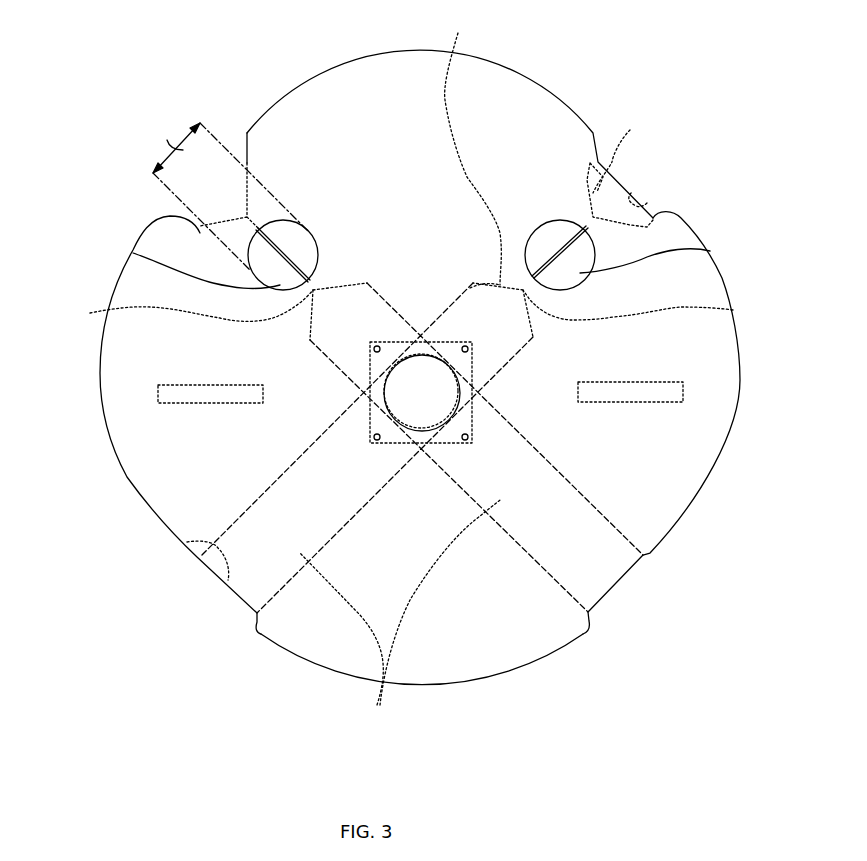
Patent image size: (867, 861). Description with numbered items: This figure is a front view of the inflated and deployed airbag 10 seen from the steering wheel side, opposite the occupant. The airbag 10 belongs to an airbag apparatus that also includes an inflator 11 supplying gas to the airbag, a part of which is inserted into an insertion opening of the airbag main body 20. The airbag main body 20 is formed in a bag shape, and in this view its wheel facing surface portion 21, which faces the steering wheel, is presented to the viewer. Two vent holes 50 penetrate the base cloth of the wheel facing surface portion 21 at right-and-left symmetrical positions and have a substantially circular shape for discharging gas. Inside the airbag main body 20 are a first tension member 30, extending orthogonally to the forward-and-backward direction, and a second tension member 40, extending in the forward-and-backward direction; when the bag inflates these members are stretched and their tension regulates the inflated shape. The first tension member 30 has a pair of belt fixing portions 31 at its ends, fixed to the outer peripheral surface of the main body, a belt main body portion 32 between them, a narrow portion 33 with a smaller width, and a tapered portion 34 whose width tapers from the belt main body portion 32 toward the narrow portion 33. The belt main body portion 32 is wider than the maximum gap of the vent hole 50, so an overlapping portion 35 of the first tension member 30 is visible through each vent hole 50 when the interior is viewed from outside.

The airbag 10 is at (424, 377).
The inflator 11 is at (370, 423).
The airbag main body 20 is at (522, 70).
The wheel facing surface portion 21 is at (482, 630).
The first tension member 30 is at (245, 511).
The belt fixing portion 31 is at (187, 542).
The belt main body portion 32 is at (400, 616).
The narrow portion 33 is at (757, 311).
The tapered portion 34 is at (549, 149).
The overlapping portion 35 is at (133, 253).
The second tension member 40 is at (207, 403).
The vent hole 50 is at (313, 230).